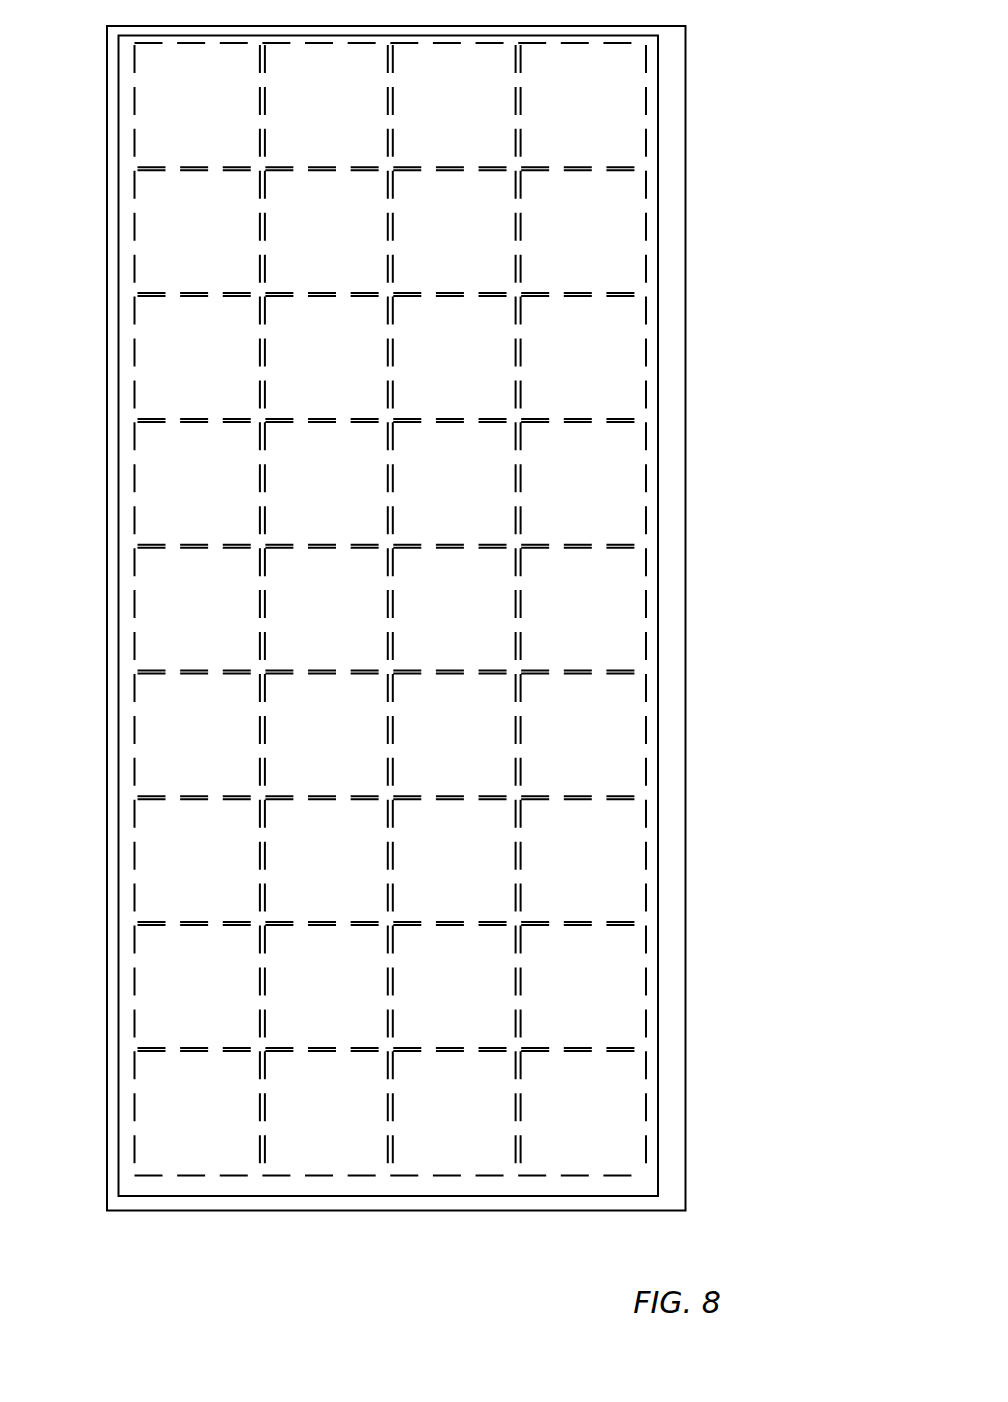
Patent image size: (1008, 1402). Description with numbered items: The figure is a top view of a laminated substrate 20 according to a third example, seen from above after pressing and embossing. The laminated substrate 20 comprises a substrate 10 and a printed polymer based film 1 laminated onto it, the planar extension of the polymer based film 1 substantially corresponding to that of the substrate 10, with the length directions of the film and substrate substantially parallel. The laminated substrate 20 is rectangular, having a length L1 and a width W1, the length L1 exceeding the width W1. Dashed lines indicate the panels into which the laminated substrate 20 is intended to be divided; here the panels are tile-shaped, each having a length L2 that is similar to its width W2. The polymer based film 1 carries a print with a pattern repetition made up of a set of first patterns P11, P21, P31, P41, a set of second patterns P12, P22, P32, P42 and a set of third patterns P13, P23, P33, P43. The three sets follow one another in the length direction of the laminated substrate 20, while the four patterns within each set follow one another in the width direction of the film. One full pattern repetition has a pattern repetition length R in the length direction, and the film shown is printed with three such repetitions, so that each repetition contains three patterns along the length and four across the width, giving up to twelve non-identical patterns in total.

The printed polymer based film 1 is at (661, 77).
The substrate 10 is at (673, 1193).
The laminated substrate 20 is at (698, 1185).
The first pattern P11 is at (581, 734).
The second pattern P12 is at (583, 621).
The third pattern P13 is at (583, 490).
The first pattern P21 is at (455, 734).
The second pattern P22 is at (455, 621).
The third pattern P23 is at (455, 490).
The first pattern P31 is at (330, 734).
The second pattern P32 is at (330, 621).
The third pattern P33 is at (330, 490).
The first pattern P41 is at (206, 734).
The second pattern P42 is at (206, 621).
The third pattern P43 is at (206, 490).
The pattern repetition length R is at (714, 61).
The length of the laminated substrate L1 is at (69, 1193).
The width of the laminated substrate W1 is at (121, 1239).
The length of the panel L2 is at (632, 1150).
The width of the panel W2 is at (632, 1138).